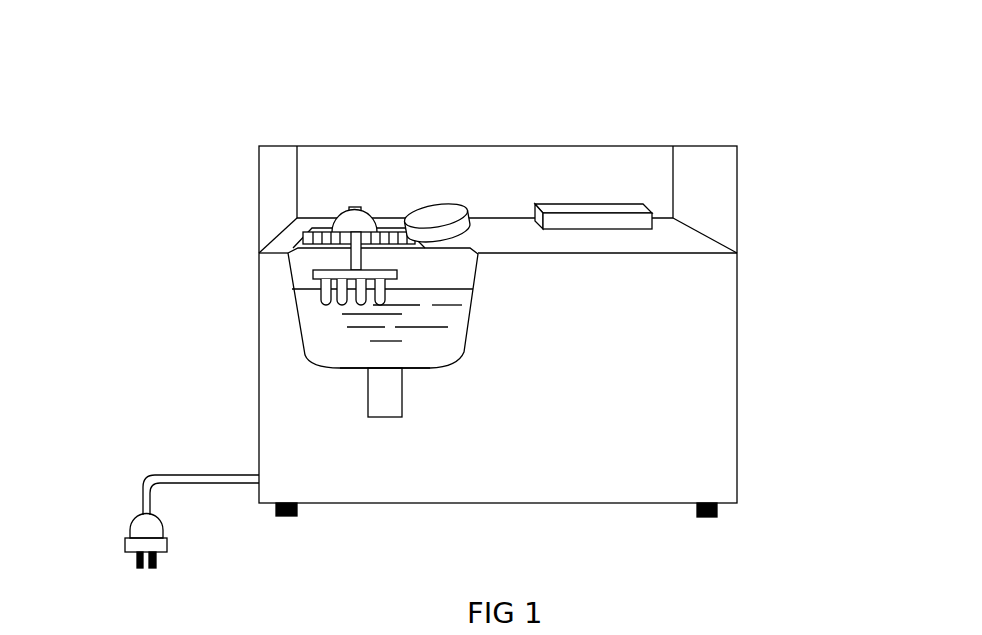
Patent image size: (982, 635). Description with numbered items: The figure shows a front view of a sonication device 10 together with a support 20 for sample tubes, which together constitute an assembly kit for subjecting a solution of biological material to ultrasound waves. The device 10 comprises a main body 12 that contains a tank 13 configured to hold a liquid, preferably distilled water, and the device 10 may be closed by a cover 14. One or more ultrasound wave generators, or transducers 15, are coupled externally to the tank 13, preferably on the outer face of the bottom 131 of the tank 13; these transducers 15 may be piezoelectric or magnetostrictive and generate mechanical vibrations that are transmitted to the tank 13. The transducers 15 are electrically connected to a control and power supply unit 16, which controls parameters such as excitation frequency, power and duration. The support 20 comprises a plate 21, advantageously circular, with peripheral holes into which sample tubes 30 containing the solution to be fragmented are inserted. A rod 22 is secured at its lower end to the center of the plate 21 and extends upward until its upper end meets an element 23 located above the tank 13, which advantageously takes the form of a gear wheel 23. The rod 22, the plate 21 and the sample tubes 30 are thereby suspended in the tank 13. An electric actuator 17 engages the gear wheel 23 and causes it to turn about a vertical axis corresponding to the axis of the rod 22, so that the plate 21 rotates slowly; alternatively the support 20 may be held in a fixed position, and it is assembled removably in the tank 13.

The sonication device 10 is at (180, 78).
The main body 12 is at (737, 303).
The tank 13 is at (465, 339).
The bottom of the tank 131 is at (447, 362).
The cover 14 is at (737, 162).
The ultrasound wave generator 15 is at (402, 402).
The control and power supply unit 16 is at (607, 205).
The electric actuator 17 is at (445, 202).
The support 20 is at (75, 150).
The plate 21 is at (313, 274).
The rod 22 is at (351, 257).
The gear wheel 23 is at (303, 236).
The sample tube 30 is at (318, 297).